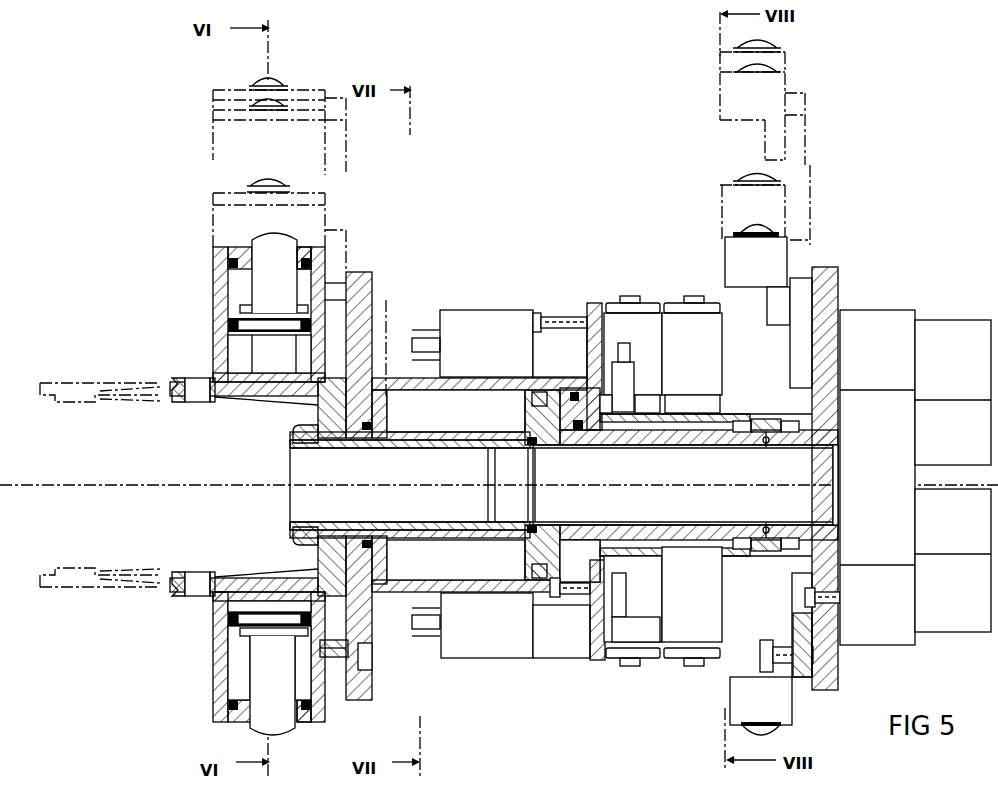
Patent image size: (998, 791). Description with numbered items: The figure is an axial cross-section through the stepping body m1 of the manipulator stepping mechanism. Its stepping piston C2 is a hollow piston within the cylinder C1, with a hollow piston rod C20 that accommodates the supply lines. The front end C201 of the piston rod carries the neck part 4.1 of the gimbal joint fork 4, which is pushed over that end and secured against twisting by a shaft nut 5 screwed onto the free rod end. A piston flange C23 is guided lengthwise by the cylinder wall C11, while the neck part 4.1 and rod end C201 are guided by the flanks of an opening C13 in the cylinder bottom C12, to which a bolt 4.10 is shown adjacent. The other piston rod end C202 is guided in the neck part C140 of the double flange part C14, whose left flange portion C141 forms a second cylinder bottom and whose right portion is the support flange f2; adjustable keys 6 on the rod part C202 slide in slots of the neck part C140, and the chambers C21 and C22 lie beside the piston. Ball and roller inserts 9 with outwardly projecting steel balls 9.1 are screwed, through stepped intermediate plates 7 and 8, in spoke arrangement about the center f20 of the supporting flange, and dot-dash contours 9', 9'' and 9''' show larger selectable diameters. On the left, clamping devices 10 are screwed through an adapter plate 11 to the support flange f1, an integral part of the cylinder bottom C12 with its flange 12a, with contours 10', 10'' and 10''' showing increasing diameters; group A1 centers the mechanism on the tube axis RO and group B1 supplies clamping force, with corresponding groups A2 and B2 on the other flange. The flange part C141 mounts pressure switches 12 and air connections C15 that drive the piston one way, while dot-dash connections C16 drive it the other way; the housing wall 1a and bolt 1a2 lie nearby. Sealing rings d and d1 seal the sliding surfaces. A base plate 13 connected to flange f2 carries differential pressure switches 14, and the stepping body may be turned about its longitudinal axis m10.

The clamping devices 10 is at (251, 307).
The contour of increasing diameter 10' is at (258, 229).
The contour of increasing diameter 10'' is at (242, 113).
The contour of increasing diameter 10''' is at (253, 126).
The group of clamping devices A1 is at (268, 184).
The group of clamping devices A2 is at (812, 240).
The group of clamping devices B1 is at (248, 740).
The group of clamping devices B2 is at (786, 730).
The sealing rings d is at (234, 258).
The seal d1 is at (303, 258).
The support flange f1 is at (360, 272).
The support flange f2 is at (840, 280).
The supporting flange center f20 is at (848, 484).
The adapter plate 11 is at (340, 297).
The pressure switches 12 is at (484, 320).
The flange 12a is at (213, 352).
The base plate 13 is at (866, 640).
The differential pressure switches 14 is at (944, 330).
The housing wall 1a is at (590, 372).
The bolt 1a2 is at (596, 308).
The stepping body m1 is at (612, 228).
The longitudinal axis m10 is at (216, 488).
The ball and roller inserts 9 is at (756, 480).
The steel balls 9.1 is at (740, 230).
The contour of increasing diameter 9' is at (769, 205).
The contour of increasing diameter 9'' is at (775, 78).
The contour of increasing diameter 9''' is at (773, 102).
The intermediate plate 8 is at (768, 304).
The intermediate plate 7 is at (792, 340).
The adjustable keys 6 is at (790, 432).
The shaft nut 5 is at (296, 428).
The joint fork 4 is at (322, 410).
The neck part 4.1 is at (388, 448).
The bolt 4.10 is at (180, 402).
The cylinder C1 is at (396, 388).
The cylinder wall C11 is at (393, 392).
The cylinder bottom C12 is at (382, 572).
The opening C13 is at (356, 440).
The double flange part C14 is at (598, 446).
The neck part C140 is at (726, 420).
The left flange portion C141 is at (598, 660).
The compressed air connections C15 is at (620, 398).
The compressed air line connections C16 is at (388, 318).
The stepping piston C2 is at (532, 412).
The piston rod C20 is at (560, 526).
The front end of piston rod C201 is at (430, 530).
The other piston rod end C202 is at (706, 445).
The chamber C21 is at (518, 552).
The sleeve C22 is at (592, 530).
The piston flange C23 is at (552, 445).
The tube axis RO is at (742, 480).